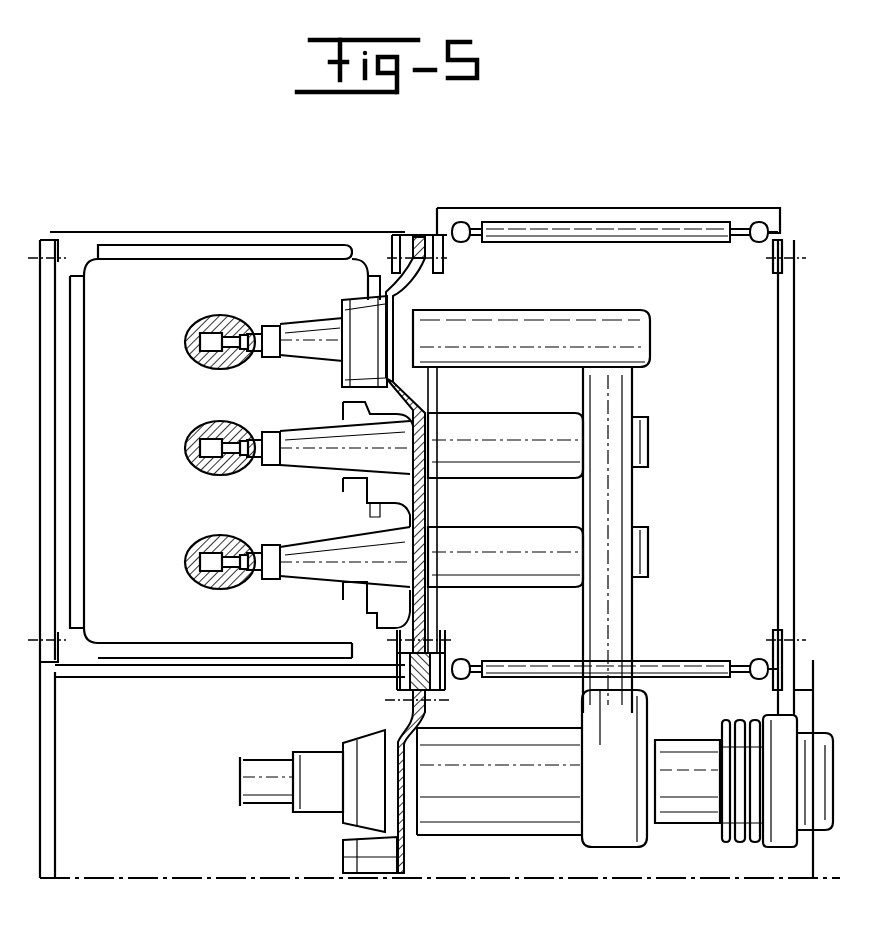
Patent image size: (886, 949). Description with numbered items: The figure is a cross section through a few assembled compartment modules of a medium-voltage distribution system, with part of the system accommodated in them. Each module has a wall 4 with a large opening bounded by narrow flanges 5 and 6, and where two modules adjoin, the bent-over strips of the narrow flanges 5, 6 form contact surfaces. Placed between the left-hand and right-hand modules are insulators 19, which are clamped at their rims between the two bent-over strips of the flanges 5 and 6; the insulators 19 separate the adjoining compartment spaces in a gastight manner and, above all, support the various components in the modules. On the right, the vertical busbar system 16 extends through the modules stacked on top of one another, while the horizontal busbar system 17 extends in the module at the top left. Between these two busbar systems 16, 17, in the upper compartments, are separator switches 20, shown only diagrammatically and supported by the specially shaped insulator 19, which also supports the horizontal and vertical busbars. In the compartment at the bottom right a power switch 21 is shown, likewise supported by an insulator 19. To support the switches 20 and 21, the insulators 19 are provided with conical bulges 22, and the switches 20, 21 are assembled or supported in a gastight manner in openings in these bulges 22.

The wall 4 is at (45, 268).
The narrow flange 5 is at (399, 238).
The narrow flange 6 is at (52, 240).
The vertical busbar system 16 is at (622, 508).
The horizontal busbar system 17 is at (193, 427).
The insulator 19 is at (432, 623).
The separator switch 20 is at (506, 357).
The power switch 21 is at (532, 838).
The conical bulge 22 is at (350, 413).